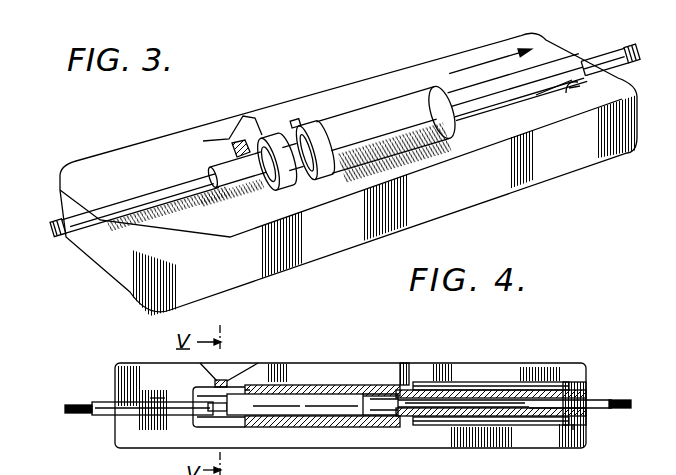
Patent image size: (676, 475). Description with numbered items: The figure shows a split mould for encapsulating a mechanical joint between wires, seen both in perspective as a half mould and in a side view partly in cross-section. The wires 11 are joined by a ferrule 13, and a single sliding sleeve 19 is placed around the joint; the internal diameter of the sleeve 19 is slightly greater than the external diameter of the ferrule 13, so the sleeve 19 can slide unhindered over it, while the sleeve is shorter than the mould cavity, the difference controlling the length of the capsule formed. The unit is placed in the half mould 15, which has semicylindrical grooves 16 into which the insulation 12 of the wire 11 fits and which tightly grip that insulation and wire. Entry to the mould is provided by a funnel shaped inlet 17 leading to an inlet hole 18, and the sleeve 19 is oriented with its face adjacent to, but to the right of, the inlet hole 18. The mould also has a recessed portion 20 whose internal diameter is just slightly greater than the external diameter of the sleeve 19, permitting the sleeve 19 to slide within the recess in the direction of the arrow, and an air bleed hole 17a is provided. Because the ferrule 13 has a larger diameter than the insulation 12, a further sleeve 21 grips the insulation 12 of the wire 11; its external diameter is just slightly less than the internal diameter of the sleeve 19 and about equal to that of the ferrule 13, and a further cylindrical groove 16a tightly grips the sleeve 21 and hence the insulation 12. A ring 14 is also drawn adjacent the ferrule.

In FIG. 3, the wire 11 is at (50, 230).
In FIG. 4, the wire 11 is at (80, 403).
In FIG. 3, the insulation 12 is at (62, 217).
In FIG. 4, the insulation 12 is at (101, 401).
In FIG. 3, the ferrule 13 is at (272, 138).
In FIG. 4, the ferrule 13 is at (349, 396).
In FIG. 3, the ring 14 is at (310, 130).
In FIG. 3, the half mould 15 is at (543, 163).
In FIG. 4, the half mould 15 is at (137, 367).
In FIG. 3, the semicylindrical grooves 16 is at (569, 88).
In FIG. 4, the semicylindrical grooves 16 is at (157, 400).
In FIG. 4, the further cylindrical groove 16a is at (573, 424).
In FIG. 3, the funnel shaped inlet 17 is at (236, 143).
In FIG. 4, the funnel shaped inlet 17 is at (226, 372).
In FIG. 4, the air bleed hole 17a is at (407, 367).
In FIG. 3, the inlet hole 18 is at (247, 117).
In FIG. 4, the inlet hole 18 is at (230, 382).
In FIG. 3, the sliding sleeve 19 is at (411, 100).
In FIG. 4, the sliding sleeve 19 is at (322, 385).
In FIG. 3, the recessed portion 20 is at (478, 87).
In FIG. 4, the recessed portion 20 is at (469, 385).
In FIG. 4, the further sleeve 21 is at (573, 386).